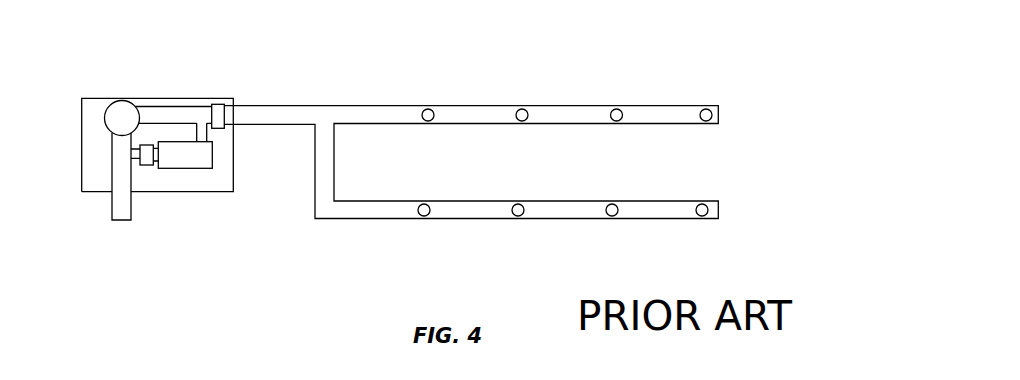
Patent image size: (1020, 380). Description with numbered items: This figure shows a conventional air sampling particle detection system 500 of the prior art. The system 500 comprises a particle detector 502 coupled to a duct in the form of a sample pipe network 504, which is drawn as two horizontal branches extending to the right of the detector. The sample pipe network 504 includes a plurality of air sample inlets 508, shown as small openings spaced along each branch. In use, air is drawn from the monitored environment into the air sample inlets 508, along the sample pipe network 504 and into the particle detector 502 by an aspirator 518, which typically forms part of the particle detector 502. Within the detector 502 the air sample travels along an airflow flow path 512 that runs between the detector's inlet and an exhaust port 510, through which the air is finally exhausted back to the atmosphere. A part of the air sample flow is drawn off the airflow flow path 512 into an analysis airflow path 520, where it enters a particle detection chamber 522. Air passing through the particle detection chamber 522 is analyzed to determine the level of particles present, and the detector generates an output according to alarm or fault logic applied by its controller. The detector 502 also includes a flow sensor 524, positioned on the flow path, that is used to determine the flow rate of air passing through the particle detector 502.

The air sampling particle detection system 500 is at (652, 83).
The particle detector 502 is at (98, 193).
The sample pipe network 504 is at (476, 106).
The air sample inlets 508 is at (429, 122).
The exhaust port 510 is at (132, 220).
The airflow flow path 512 is at (197, 123).
The aspirator 518 is at (124, 102).
The analysis airflow path 520 is at (213, 142).
The particle detection chamber 522 is at (185, 168).
The flow sensor 524 is at (233, 98).